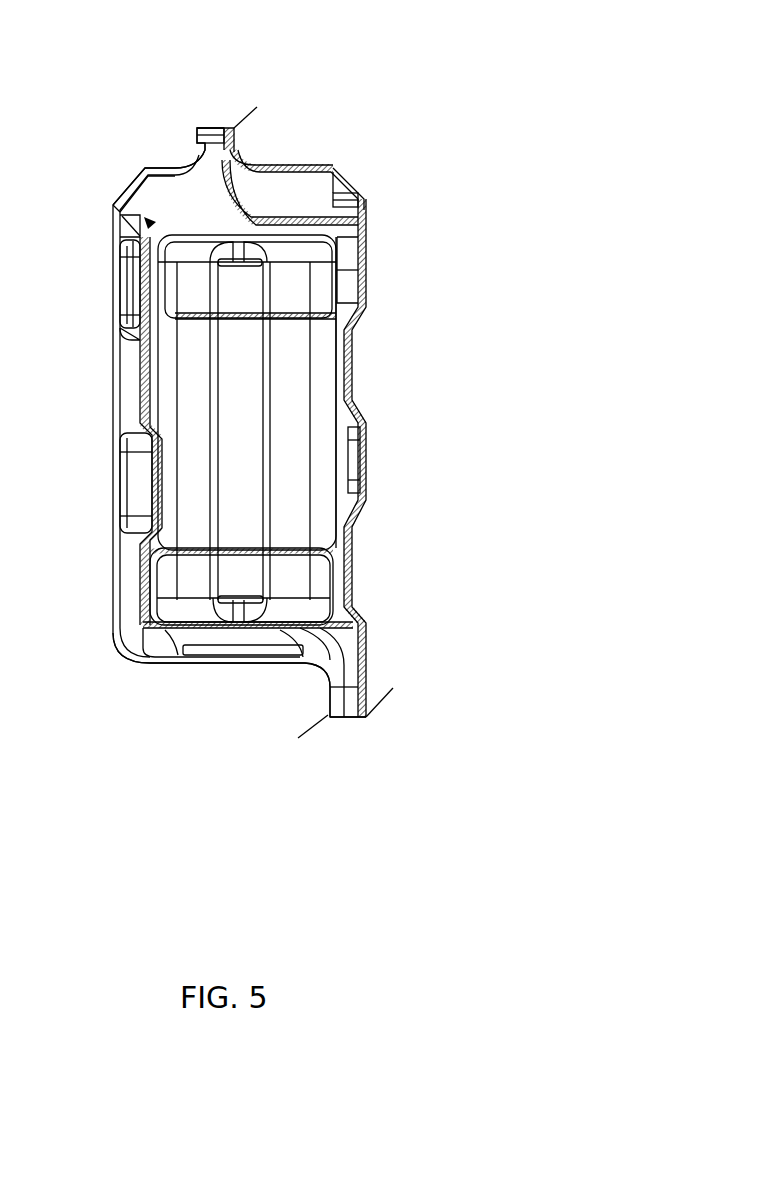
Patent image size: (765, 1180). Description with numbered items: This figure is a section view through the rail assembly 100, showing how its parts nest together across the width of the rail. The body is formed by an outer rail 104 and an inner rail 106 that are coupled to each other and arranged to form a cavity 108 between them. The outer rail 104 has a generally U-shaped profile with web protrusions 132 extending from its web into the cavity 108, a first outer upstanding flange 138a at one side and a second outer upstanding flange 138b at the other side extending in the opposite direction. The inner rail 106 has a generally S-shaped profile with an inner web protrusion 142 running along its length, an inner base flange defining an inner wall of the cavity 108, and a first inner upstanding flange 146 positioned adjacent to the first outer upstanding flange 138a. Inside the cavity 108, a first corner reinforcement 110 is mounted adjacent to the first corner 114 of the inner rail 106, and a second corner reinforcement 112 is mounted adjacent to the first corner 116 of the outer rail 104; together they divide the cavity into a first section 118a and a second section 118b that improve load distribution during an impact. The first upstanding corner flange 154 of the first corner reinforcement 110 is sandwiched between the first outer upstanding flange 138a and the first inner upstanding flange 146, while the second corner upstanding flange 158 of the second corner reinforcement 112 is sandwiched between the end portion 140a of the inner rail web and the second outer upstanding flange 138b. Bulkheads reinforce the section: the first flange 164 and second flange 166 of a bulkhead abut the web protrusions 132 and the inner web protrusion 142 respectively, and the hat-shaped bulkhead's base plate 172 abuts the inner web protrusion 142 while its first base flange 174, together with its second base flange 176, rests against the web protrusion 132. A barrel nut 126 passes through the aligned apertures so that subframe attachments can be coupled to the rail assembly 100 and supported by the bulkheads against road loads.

The rail assembly 100 is at (276, 57).
The outer rail 104 is at (160, 164).
The inner rail 106 is at (367, 224).
The cavity 108 is at (116, 218).
The first corner reinforcement 110 is at (243, 195).
The second corner reinforcement 112 is at (312, 634).
The first corner of the inner rail 114 is at (340, 173).
The first corner of the outer rail 116 is at (148, 662).
The first section 118a is at (175, 645).
The second section 118b is at (302, 187).
The barrel nut 126 is at (223, 657).
The web protrusion 132 is at (128, 331).
The first outer upstanding flange 138a is at (198, 128).
The second outer upstanding flange 138b is at (342, 707).
The end portion of the inner rail web 140a is at (366, 630).
The inner web protrusion 142 is at (352, 380).
The first inner upstanding flange 146 is at (244, 142).
The first upstanding corner flange 154 is at (190, 160).
The second corner upstanding flange 158 is at (366, 660).
The first flange 164 is at (142, 386).
The second flange 166 is at (341, 287).
The base plate 172 is at (354, 460).
The first base flange 174 is at (154, 277).
The second base flange 176 is at (142, 558).